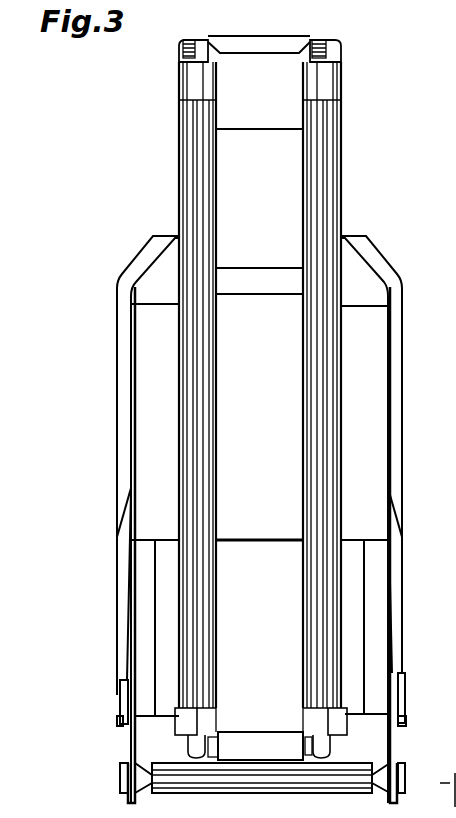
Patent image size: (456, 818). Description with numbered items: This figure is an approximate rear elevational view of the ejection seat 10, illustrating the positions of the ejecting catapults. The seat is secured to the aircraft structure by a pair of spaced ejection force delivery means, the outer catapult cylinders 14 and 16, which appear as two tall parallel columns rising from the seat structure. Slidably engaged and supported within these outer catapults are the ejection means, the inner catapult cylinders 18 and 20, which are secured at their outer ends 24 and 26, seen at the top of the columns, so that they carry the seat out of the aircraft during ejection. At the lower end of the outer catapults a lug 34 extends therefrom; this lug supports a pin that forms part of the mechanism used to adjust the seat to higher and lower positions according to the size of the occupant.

The ejection seat 10 is at (403, 278).
The outer catapult cylinder 14 is at (195, 207).
The outer catapult cylinder 16 is at (323, 218).
The inner catapult cylinder 18 is at (185, 80).
The inner catapult cylinder 20 is at (333, 75).
The outer end 24 is at (194, 42).
The outer end 26 is at (318, 40).
The lug 34 is at (197, 742).